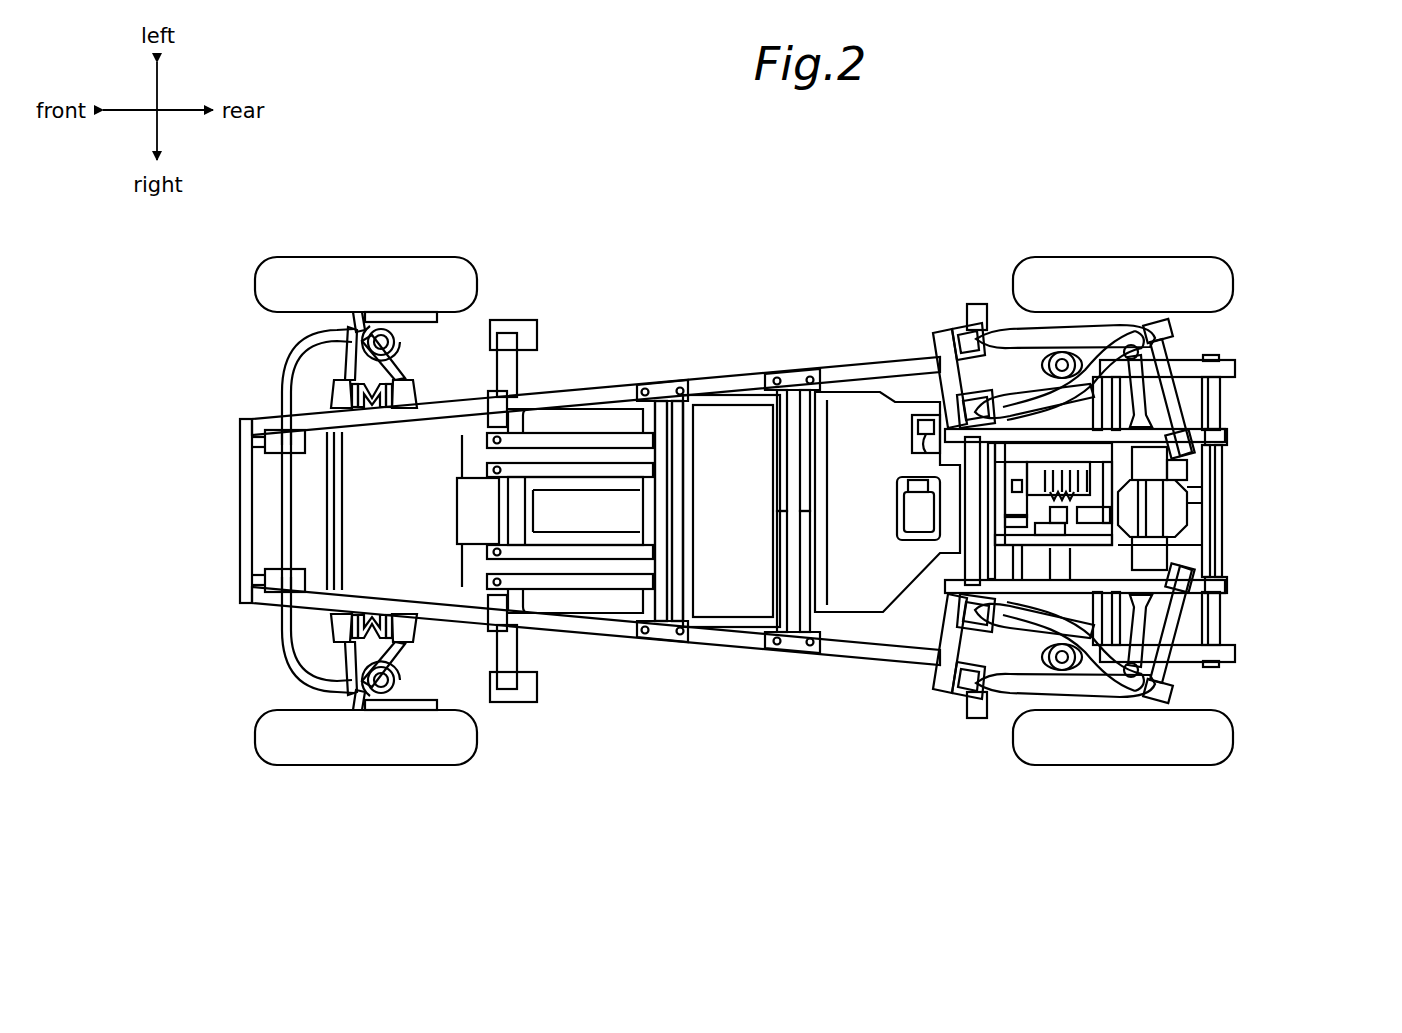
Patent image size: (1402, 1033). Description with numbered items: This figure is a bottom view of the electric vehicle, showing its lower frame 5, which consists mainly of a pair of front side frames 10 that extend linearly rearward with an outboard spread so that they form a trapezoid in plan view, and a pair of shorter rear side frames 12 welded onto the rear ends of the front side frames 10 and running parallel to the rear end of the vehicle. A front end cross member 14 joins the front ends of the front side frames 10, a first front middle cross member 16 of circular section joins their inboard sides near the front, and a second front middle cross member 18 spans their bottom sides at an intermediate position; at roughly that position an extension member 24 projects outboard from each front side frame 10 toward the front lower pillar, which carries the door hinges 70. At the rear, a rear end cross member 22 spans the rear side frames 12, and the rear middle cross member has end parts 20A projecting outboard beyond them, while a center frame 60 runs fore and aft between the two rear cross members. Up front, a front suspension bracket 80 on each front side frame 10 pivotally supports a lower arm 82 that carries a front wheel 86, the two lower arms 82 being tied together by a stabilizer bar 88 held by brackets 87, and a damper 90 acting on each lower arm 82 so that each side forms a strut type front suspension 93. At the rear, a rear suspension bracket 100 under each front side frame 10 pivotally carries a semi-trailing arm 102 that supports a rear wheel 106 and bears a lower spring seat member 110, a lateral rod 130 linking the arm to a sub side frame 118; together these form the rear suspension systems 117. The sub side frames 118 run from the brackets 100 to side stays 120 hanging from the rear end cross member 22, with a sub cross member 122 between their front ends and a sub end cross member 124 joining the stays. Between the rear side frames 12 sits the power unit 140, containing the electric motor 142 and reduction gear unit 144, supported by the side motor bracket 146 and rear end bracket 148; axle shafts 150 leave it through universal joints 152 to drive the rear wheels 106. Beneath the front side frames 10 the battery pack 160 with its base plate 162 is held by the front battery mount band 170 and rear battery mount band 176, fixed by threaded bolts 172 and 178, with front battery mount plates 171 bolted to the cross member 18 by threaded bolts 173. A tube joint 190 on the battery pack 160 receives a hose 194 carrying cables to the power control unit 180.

The lower frame 5 is at (745, 652).
The front side frame 10 is at (588, 398).
The rear side frame 12 is at (1228, 370).
The front end cross member 14 is at (242, 550).
The first front middle cross member 16 is at (333, 520).
The second front middle cross member 18 is at (495, 402).
The end part 20A is at (975, 304).
The rear end cross member 22 is at (1215, 405).
The extension member 24 is at (517, 375).
The center frame 60 is at (1195, 542).
The door hinge 70 is at (525, 322).
The front suspension bracket 80 is at (378, 405).
The lower arm 82 is at (347, 366).
The front wheel 86 is at (338, 272).
The bracket 87 is at (280, 440).
The stabilizer bar 88 is at (283, 490).
The damper 90 is at (382, 330).
The front suspension 93 is at (418, 358).
The rear suspension bracket 100 is at (941, 337).
The semi-trailing arm 102 is at (1068, 335).
The rear wheel 106 is at (1235, 288).
The lower spring seat member 110 is at (1060, 352).
The rear suspension system 117 is at (1182, 356).
The sub side frame 118 is at (1095, 375).
The side stay 120 is at (1228, 440).
The sub cross member 122 is at (960, 555).
The sub end cross member 124 is at (1190, 500).
The lateral rod 130 is at (1208, 400).
The power unit 140 is at (1040, 538).
The electric motor 142 is at (1032, 468).
The reduction gear unit 144 is at (1188, 518).
The side motor bracket 146 is at (1070, 600).
The rear end bracket 148 is at (1190, 492).
The axle shaft 150 is at (1165, 395).
The universal joint 152 is at (1170, 425).
The battery pack 160 is at (572, 597).
The base plate 162 is at (718, 627).
The front battery mount band 170 is at (660, 482).
The front battery mount plate 171 is at (540, 455).
The threaded bolt 172 is at (645, 386).
The threaded bolt 173 is at (492, 440).
The rear battery mount band 176 is at (793, 457).
The threaded bolt 178 is at (778, 377).
The power control unit 180 is at (896, 404).
The tube joint 190 is at (905, 520).
The hose 194 is at (915, 462).